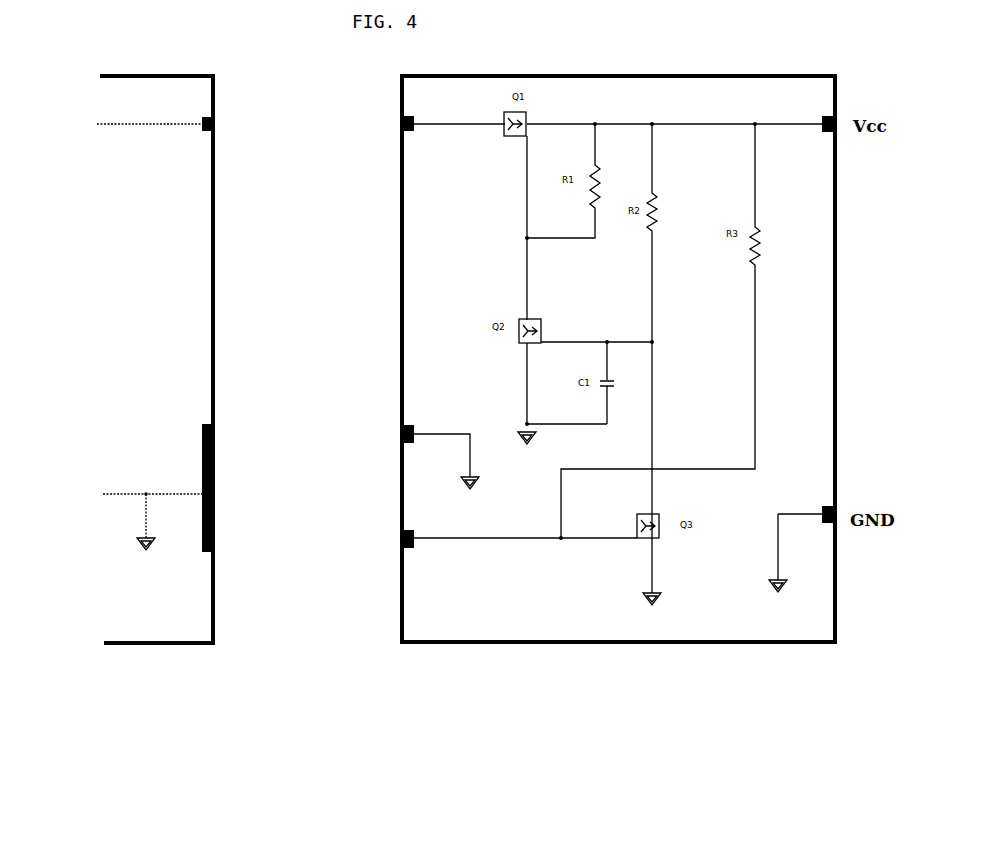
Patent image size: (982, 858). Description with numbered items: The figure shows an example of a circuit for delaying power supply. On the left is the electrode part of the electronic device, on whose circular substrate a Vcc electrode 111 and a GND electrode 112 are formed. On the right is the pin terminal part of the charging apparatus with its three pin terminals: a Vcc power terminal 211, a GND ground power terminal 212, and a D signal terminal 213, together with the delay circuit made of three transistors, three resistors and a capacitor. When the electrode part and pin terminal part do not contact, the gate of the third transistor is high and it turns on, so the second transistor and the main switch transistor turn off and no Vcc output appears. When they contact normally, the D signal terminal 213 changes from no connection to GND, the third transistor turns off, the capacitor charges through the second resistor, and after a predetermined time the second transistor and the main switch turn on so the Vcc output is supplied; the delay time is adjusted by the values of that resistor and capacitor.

The Vcc electrode 111 is at (204, 132).
The GND electrode 112 is at (202, 550).
The Vcc power terminal 211 is at (400, 137).
The GND ground power terminal 212 is at (400, 447).
The D signal terminal 213 is at (400, 558).